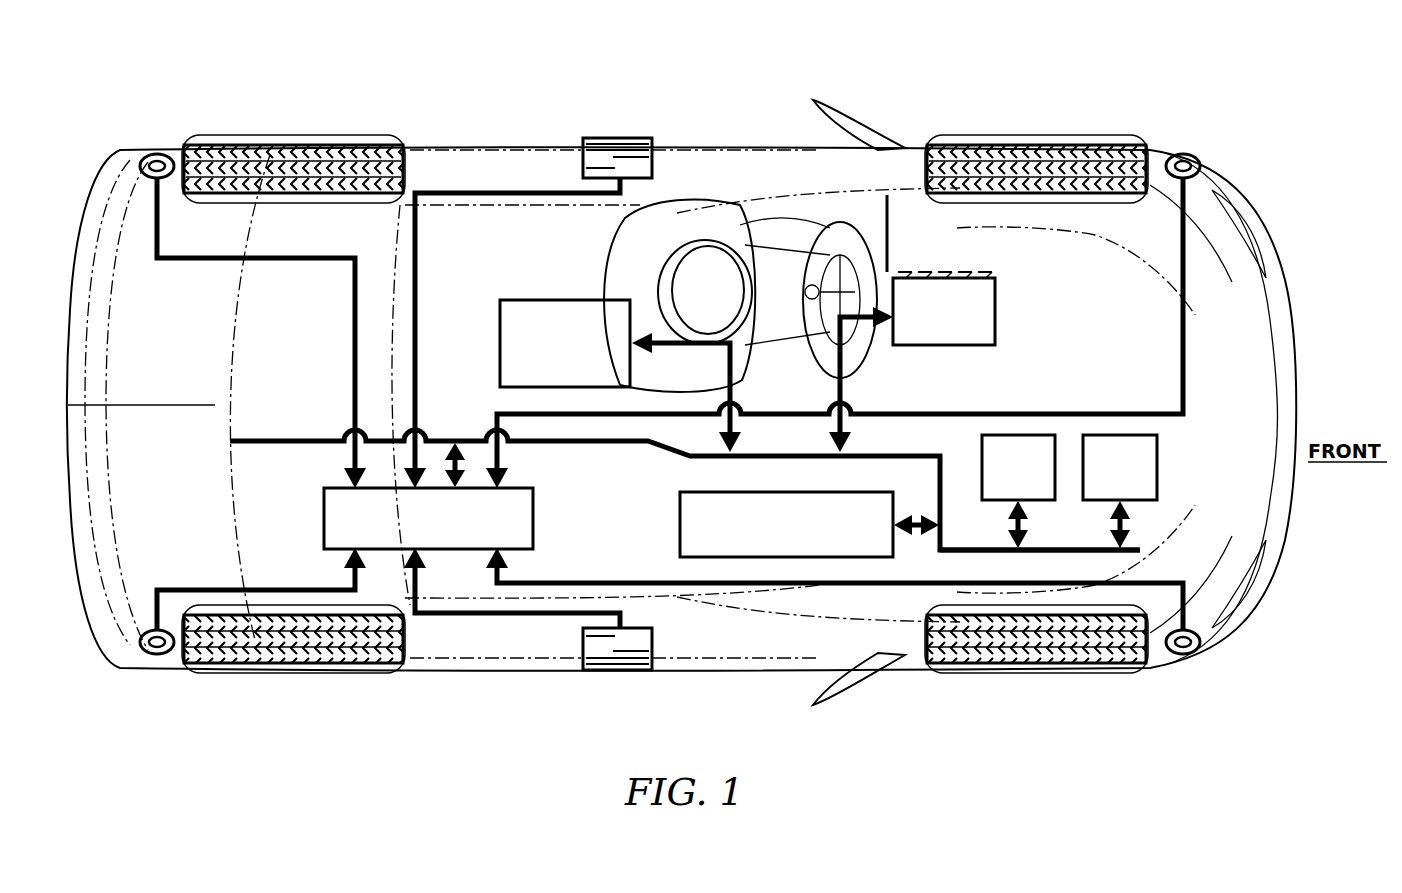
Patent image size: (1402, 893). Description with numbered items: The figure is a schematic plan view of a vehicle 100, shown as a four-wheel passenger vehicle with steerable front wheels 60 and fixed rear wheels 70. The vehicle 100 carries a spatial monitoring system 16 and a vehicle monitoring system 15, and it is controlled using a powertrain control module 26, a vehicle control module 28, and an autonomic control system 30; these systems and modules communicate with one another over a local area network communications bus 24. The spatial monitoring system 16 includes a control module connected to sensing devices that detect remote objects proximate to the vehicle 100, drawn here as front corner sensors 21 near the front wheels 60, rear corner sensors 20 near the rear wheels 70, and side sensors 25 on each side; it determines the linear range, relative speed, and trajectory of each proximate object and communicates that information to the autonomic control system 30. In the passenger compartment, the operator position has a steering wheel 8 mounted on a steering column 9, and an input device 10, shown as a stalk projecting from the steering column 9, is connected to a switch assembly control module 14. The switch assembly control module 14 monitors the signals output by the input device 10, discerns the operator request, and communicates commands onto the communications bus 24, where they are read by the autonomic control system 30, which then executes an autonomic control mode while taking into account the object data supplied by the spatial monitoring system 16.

The vehicle 100 is at (681, 366).
The rear wheels 70 is at (218, 135).
The front wheels 60 is at (1092, 143).
The rear corner sensors 20 is at (152, 155).
The front corner sensors 21 is at (1185, 152).
The side sensors 25 is at (610, 137).
The steering wheel 8 is at (865, 345).
The steering column 9 is at (905, 267).
The input device 10 is at (893, 232).
The switch assembly control module 14 is at (995, 305).
The vehicle monitoring system 15 is at (620, 376).
The spatial monitoring system 16 is at (685, 490).
The local area network communications bus 24 is at (1058, 553).
The powertrain control module 26 is at (1018, 491).
The vehicle control module 28 is at (1120, 491).
The autonomic control system 30 is at (809, 524).